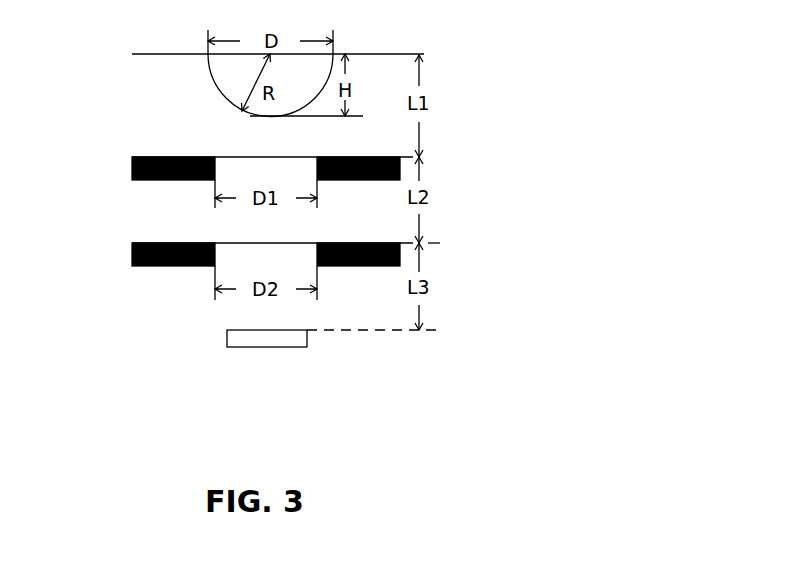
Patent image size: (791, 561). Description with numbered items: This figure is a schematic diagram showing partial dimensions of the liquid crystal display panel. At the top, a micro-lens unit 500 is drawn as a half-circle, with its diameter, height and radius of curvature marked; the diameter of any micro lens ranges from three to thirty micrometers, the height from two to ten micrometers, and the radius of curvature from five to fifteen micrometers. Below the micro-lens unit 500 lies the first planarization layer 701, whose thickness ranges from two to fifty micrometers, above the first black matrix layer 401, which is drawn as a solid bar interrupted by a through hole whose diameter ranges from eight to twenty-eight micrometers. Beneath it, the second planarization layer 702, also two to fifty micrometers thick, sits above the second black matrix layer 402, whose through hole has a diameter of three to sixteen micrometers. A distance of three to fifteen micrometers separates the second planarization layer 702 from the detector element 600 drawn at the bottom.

The micro-lens unit 500 is at (228, 67).
The first planarization layer 701 is at (177, 128).
The first black matrix layer 401 is at (145, 180).
The second planarization layer 702 is at (148, 207).
The second black matrix layer 402 is at (132, 266).
The image sensor 600 is at (248, 338).